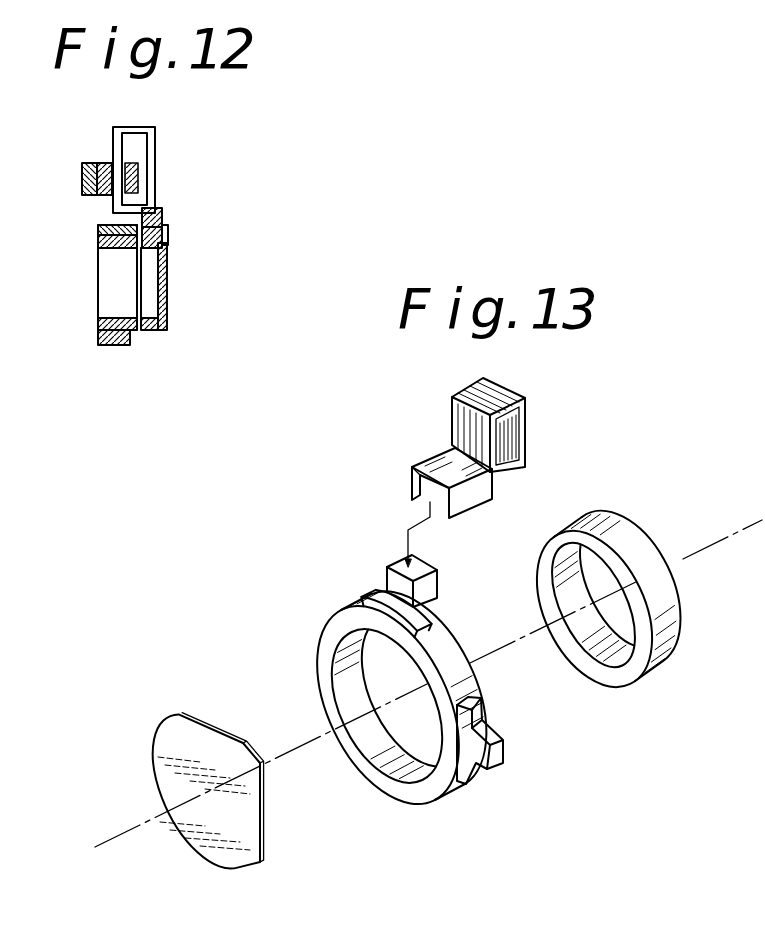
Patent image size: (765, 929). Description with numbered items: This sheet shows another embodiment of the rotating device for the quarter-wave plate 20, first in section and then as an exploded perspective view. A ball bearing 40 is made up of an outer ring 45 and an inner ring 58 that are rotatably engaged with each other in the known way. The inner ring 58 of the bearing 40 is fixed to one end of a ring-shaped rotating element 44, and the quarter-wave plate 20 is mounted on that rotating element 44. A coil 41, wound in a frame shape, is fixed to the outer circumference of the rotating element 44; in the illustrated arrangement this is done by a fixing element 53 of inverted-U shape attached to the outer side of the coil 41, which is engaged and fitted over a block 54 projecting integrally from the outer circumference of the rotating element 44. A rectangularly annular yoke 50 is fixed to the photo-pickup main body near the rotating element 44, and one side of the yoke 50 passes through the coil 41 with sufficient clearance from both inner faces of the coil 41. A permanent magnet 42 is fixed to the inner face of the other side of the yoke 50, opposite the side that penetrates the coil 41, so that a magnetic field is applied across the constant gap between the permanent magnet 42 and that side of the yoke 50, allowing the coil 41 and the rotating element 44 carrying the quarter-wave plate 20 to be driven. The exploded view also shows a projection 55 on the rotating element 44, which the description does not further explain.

In FIG. 12, the λ/4 plate 20 is at (167, 263).
In FIG. 13, the λ/4 plate 20 is at (207, 843).
In FIG. 12, the ball bearing 40 is at (88, 311).
In FIG. 13, the ball bearing 40 is at (660, 514).
In FIG. 12, the coil 41 is at (155, 152).
In FIG. 13, the coil 41 is at (517, 430).
In FIG. 12, the permanent magnet 42 is at (108, 162).
In FIG. 12, the rotating element 44 is at (147, 330).
In FIG. 13, the rotating element 44 is at (425, 793).
In FIG. 12, the outer ring 45 is at (112, 345).
In FIG. 12, the yoke 50 is at (82, 176).
In FIG. 13, the fixing element 53 is at (430, 462).
In FIG. 13, the block 54 is at (393, 568).
In FIG. 13, the projection 55 is at (500, 760).
In FIG. 12, the inner ring 58 is at (113, 250).